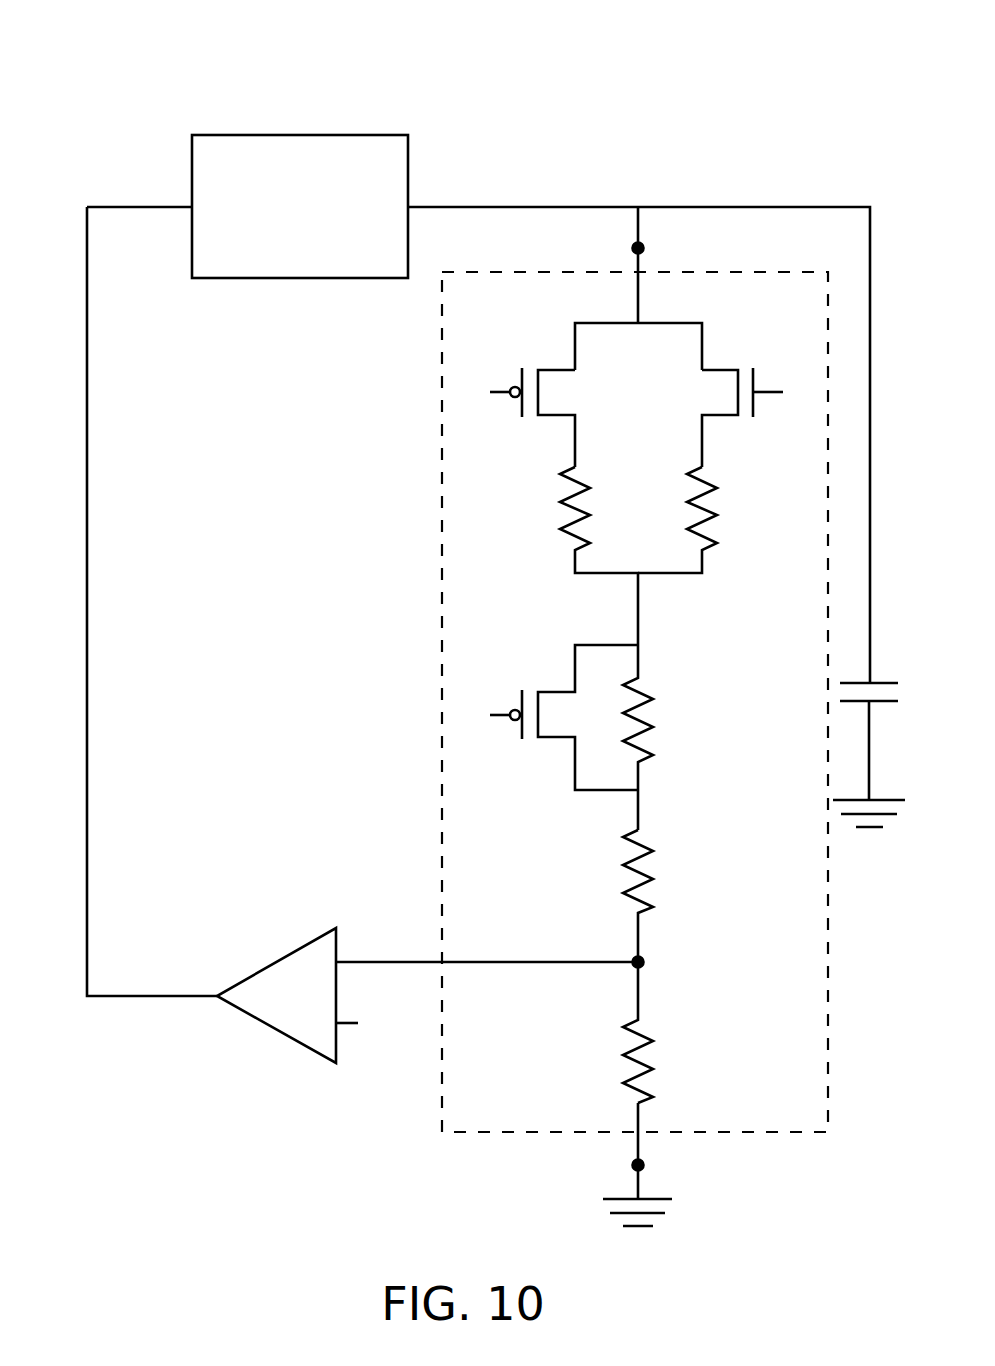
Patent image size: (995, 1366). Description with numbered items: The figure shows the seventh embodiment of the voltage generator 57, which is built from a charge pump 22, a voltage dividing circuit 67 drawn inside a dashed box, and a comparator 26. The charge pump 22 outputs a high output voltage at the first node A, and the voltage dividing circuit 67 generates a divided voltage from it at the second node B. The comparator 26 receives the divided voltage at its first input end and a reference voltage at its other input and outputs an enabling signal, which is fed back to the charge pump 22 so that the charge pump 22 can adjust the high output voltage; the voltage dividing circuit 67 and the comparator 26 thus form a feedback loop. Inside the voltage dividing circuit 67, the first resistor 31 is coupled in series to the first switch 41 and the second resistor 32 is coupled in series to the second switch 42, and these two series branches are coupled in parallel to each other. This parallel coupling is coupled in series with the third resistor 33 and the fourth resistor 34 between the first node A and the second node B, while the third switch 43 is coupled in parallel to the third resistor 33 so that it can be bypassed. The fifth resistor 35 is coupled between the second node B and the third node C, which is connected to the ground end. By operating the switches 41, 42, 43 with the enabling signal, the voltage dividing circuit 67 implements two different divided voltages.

The voltage generator 57 is at (760, 70).
The charge pump 22 is at (382, 134).
The comparator 26 is at (276, 958).
The voltage dividing circuit 67 is at (783, 270).
The first switch 41 is at (527, 366).
The second switch 42 is at (750, 366).
The third switch 43 is at (522, 745).
The first resistor 31 is at (555, 505).
The second resistor 32 is at (720, 505).
The third resistor 33 is at (665, 710).
The fourth resistor 34 is at (665, 865).
The fifth resistor 35 is at (665, 1052).